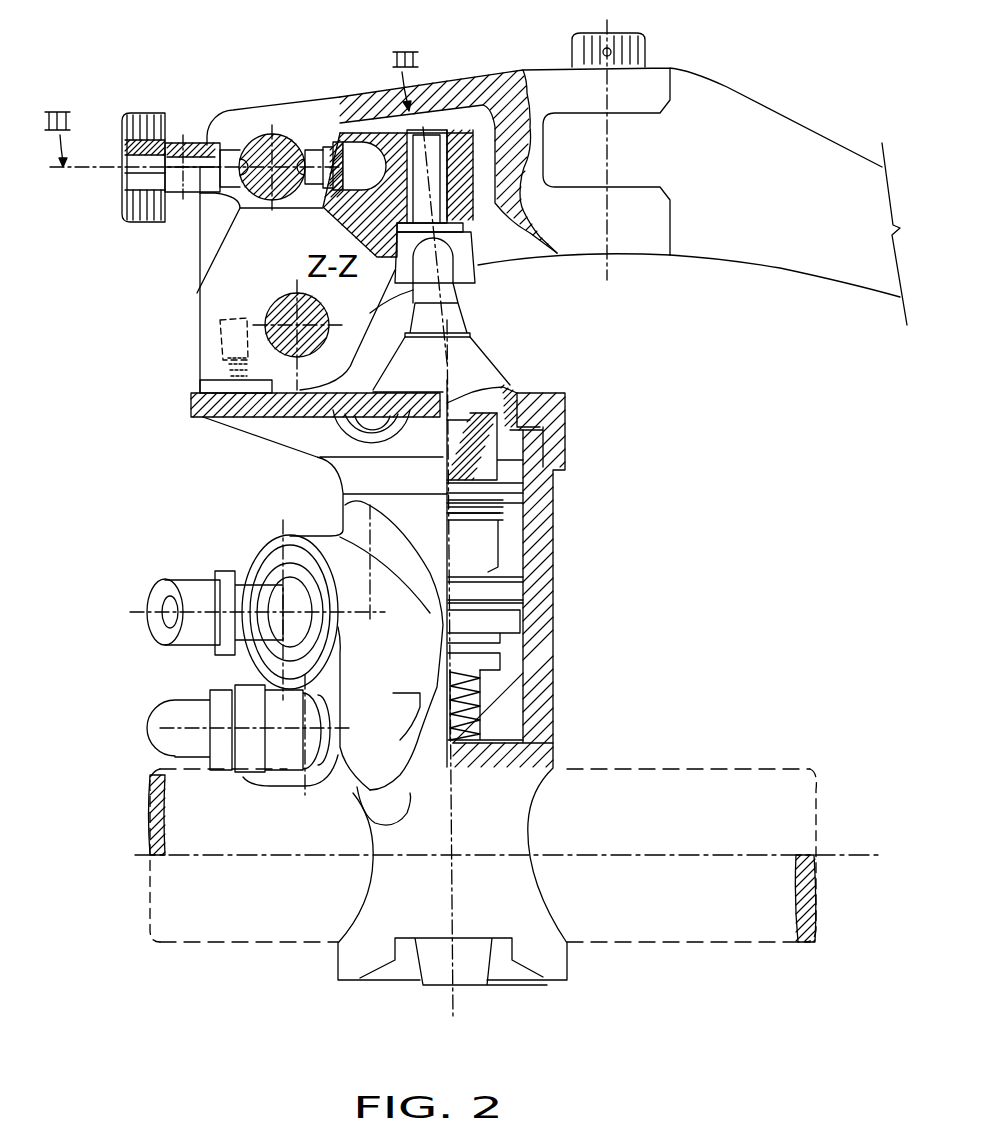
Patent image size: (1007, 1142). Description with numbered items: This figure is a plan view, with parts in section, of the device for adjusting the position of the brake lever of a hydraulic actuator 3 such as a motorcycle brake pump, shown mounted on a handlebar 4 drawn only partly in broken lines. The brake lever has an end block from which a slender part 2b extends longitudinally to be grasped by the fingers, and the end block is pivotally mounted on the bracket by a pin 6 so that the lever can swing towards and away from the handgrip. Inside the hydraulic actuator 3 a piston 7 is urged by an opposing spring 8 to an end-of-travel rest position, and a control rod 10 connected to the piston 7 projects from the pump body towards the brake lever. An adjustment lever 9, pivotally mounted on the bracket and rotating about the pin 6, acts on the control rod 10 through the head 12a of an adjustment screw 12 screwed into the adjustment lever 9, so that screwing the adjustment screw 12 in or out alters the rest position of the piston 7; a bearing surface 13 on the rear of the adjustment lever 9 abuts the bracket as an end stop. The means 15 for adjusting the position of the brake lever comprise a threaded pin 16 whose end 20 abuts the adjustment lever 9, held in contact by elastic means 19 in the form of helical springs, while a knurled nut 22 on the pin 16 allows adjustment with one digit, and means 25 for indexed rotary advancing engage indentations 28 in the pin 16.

The slender part 2b is at (785, 137).
The hydraulic actuator 3 is at (540, 627).
The handlebar 4 is at (727, 770).
The pin 6 is at (274, 302).
The piston 7 is at (488, 572).
The opposing spring 8 is at (480, 697).
The adjustment lever 9 is at (220, 295).
The control rod 10 is at (465, 290).
The adjustment screw 12 is at (437, 160).
The head 12a is at (473, 267).
The bearing surface 13 is at (205, 414).
The means for adjusting the position of the brake lever 15 is at (209, 125).
The pin 16 is at (232, 138).
The elastic means 19 is at (290, 385).
The end 20 is at (350, 158).
The knurled nut 22 is at (140, 113).
The means for indexed rotary advancing 25 is at (200, 243).
The indentation 28 is at (317, 133).